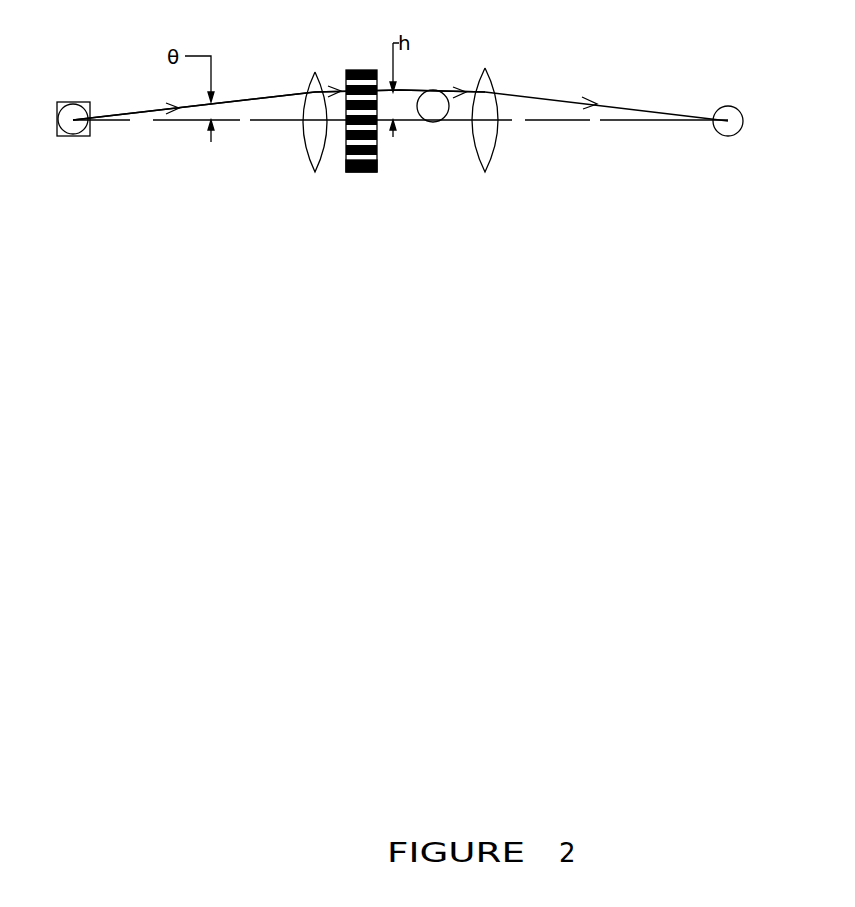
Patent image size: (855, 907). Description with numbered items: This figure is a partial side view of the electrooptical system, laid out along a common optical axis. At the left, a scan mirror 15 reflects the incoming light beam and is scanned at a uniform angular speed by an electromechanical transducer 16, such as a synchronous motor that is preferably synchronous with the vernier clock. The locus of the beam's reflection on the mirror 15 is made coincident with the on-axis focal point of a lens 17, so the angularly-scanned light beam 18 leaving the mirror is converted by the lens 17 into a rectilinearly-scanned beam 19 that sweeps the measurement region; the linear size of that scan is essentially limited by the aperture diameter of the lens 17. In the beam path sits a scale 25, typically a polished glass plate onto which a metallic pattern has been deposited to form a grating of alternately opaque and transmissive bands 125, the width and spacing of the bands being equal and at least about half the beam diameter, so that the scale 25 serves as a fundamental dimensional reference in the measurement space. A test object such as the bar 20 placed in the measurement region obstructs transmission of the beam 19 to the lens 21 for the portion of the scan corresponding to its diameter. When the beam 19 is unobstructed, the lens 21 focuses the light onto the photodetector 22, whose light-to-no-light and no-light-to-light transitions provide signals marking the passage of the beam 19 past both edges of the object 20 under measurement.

The scan mirror 15 is at (82, 138).
The electromechanical transducer 16 is at (84, 102).
The lens 17 is at (302, 147).
The angularly-scanned light beam 18 is at (130, 113).
The rectilinearly-scanned beam 19 is at (407, 92).
The bar 20 is at (417, 108).
The lens 21 is at (497, 150).
The photodetector 22 is at (742, 116).
The scale 25 is at (345, 82).
The alternately opaque and transmissive bands 125 is at (380, 163).